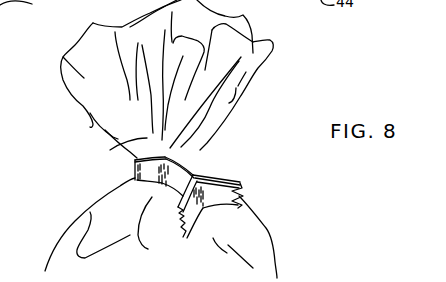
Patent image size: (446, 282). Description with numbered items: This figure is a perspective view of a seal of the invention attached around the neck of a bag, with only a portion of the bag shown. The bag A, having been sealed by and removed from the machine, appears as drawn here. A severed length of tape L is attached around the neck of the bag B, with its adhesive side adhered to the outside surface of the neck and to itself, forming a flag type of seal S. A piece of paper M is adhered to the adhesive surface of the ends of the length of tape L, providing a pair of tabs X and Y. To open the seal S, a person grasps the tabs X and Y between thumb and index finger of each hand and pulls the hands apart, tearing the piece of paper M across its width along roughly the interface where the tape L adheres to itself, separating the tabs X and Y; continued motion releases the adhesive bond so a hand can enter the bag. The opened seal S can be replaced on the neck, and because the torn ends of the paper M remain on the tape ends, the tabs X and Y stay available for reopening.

The bag B is at (133, 158).
The length of tape L is at (131, 170).
The seal S is at (195, 158).
The tab Y is at (245, 186).
The tab X is at (175, 230).
The piece of paper M is at (203, 208).
The bag A is at (100, 210).